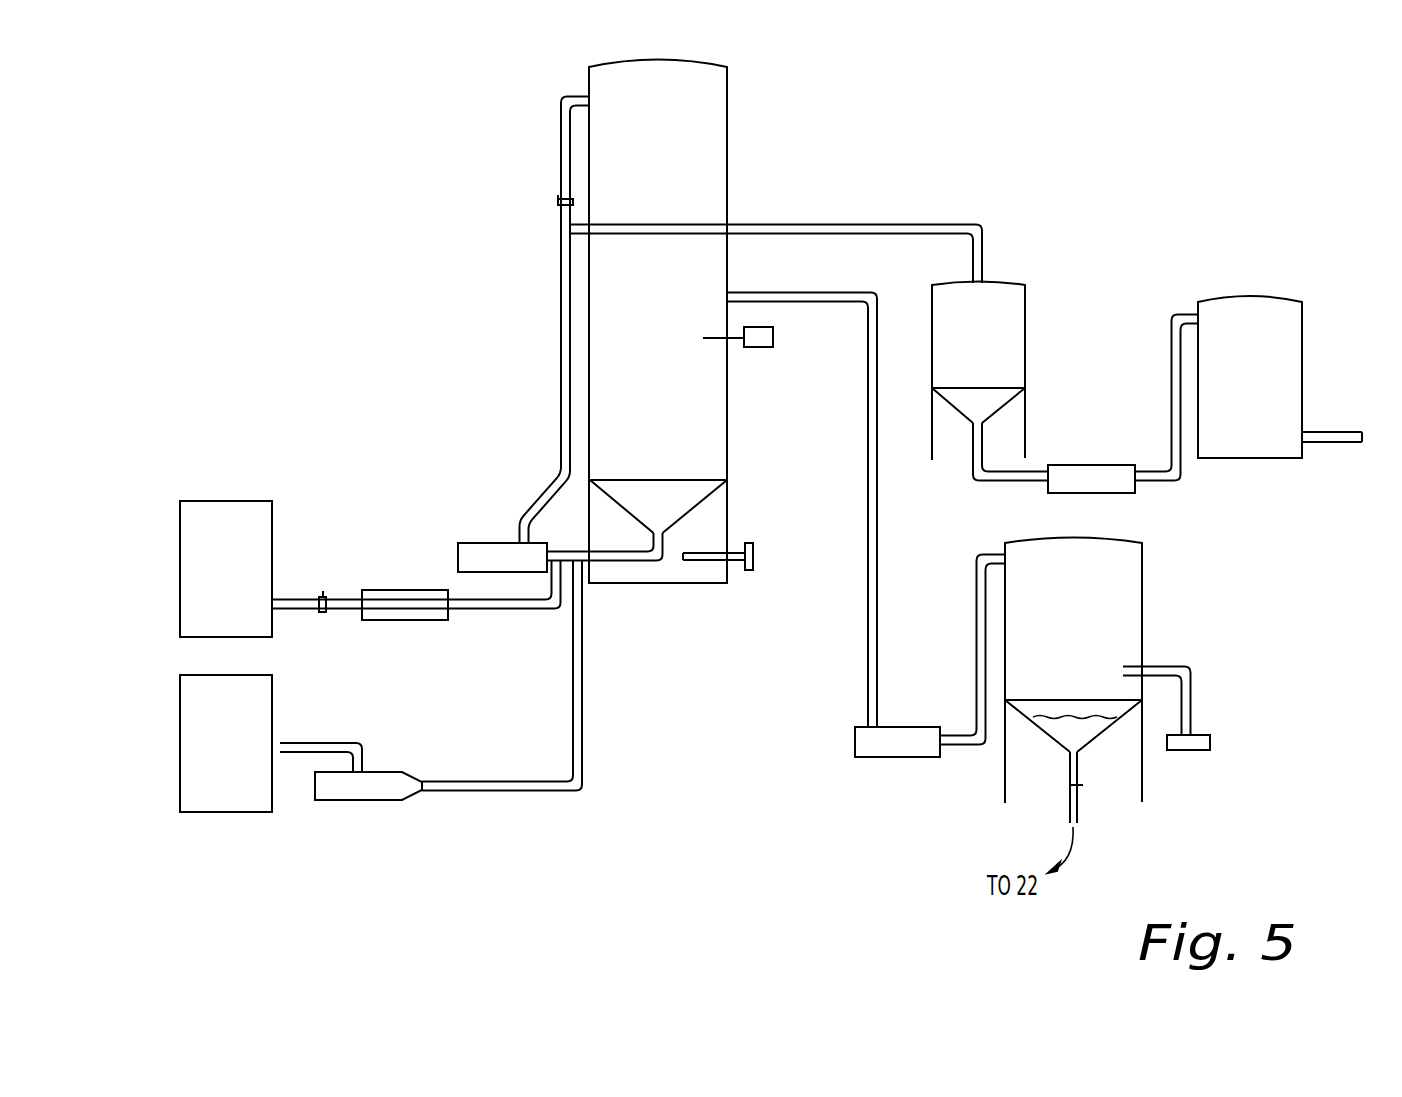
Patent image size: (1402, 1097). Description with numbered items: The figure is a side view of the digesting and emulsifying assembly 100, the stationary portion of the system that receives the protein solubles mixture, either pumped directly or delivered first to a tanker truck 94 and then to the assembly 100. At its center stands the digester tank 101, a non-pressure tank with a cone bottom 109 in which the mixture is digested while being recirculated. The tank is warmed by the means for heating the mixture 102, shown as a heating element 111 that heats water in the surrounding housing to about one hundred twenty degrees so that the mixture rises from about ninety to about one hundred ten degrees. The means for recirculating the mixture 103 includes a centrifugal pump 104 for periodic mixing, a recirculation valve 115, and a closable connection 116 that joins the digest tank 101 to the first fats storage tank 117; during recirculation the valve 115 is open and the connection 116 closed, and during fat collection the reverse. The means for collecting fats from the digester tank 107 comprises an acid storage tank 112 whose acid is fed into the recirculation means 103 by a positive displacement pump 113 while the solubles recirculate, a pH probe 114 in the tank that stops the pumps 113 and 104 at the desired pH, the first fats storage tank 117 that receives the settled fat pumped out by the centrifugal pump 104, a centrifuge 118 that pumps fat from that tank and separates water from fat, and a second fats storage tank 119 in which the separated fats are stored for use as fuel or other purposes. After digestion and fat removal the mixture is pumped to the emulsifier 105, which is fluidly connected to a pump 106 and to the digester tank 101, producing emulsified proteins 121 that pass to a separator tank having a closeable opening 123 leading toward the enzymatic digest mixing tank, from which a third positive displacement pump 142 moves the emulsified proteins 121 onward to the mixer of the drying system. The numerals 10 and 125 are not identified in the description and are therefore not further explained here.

The reactor nozzle region 10 is at (718, 518).
The tanker truck 94 is at (272, 702).
The digesting and emulsifying assembly 100 is at (727, 855).
The digester tank 101 is at (727, 148).
The means for heating the mixture 102 is at (673, 565).
The means for recirculating the mixture 103 is at (561, 138).
The centrifugal pump 104 is at (483, 543).
The emulsifier 105 is at (883, 757).
The pump 106 is at (897, 803).
The means for collecting fats from the digester tank 107 is at (1142, 585).
The cone bottom 109 is at (627, 513).
The heating element 111 is at (747, 573).
The acid storage tank 112 is at (212, 501).
The positive displacement pump 113 is at (325, 612).
The pH probe 114 is at (753, 347).
The recirculation valve 115 is at (558, 202).
The closable connection 116 is at (883, 224).
The first fats storage tank 117 is at (1025, 328).
The centrifuge 118 is at (1065, 465).
The second fats storage tank 119 is at (1270, 458).
The emulsified proteins 121 is at (975, 588).
The closeable opening 123 is at (1078, 803).
The liquid 125 is at (1052, 717).
The third positive displacement pump 142 is at (1190, 750).